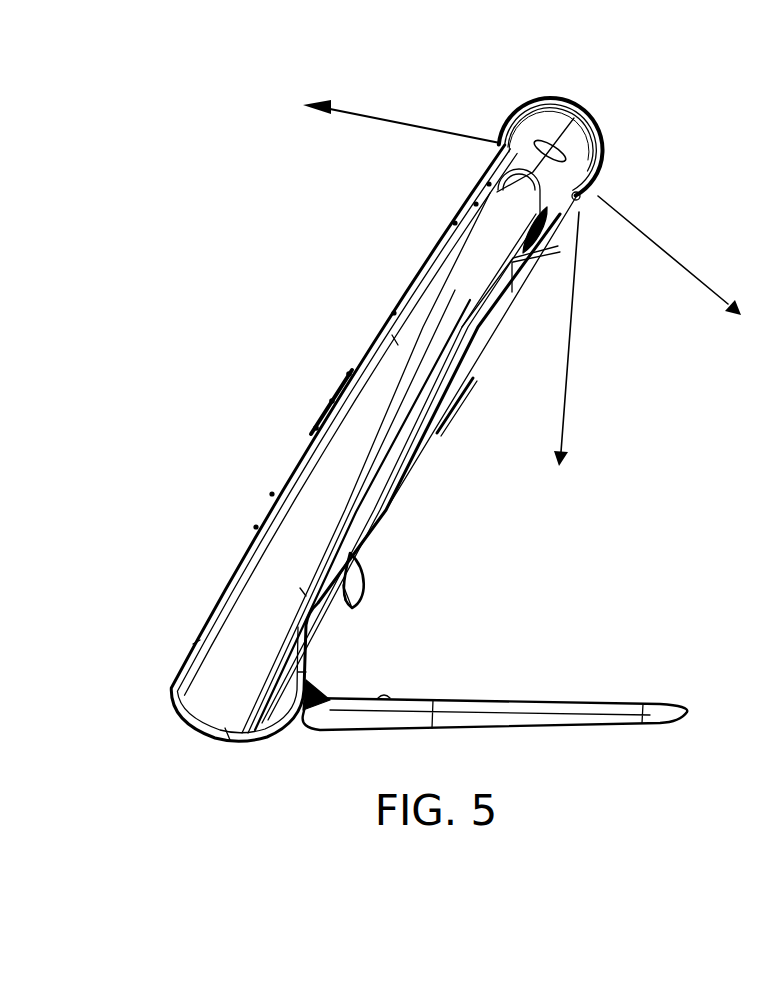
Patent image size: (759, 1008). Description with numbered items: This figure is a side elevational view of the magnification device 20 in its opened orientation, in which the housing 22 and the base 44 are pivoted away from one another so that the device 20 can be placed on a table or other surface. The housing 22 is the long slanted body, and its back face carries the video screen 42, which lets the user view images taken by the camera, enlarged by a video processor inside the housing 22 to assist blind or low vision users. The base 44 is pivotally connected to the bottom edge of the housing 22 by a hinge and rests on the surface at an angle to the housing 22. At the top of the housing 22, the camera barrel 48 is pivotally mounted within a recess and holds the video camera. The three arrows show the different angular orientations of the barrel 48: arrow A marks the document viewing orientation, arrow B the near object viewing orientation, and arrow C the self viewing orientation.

The magnification device 20 is at (641, 96).
The housing 22 is at (215, 606).
The video screen 42 is at (318, 424).
The base 44 is at (684, 710).
The camera barrel 48 is at (606, 130).